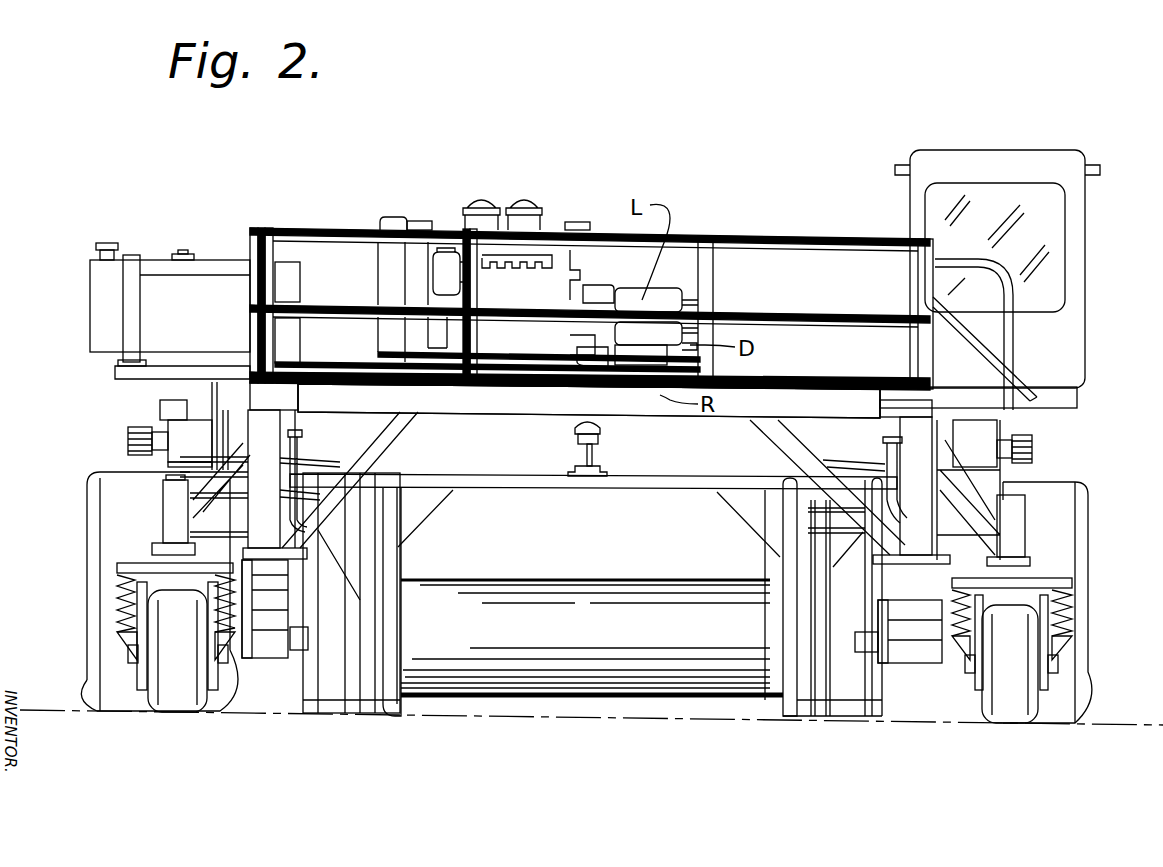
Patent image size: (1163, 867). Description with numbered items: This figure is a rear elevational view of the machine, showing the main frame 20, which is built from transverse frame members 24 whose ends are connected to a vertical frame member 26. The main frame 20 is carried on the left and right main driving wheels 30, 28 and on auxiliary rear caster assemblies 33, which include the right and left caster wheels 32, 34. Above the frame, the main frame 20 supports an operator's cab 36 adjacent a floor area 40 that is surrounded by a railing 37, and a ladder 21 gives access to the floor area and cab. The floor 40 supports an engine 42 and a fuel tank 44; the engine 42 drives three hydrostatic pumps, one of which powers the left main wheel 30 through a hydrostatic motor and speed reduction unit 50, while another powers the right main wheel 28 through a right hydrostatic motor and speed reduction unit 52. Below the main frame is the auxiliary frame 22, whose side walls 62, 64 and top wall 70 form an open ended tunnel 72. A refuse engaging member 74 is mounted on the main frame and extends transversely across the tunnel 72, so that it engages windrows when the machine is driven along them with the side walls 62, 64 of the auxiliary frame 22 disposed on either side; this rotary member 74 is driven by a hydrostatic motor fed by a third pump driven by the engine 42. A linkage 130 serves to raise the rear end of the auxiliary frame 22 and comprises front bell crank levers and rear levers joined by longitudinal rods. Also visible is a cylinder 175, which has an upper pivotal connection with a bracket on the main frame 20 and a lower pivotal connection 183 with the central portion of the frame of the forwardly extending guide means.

The main frame 20 is at (440, 412).
The ladder 21 is at (1010, 338).
The auxiliary frame 22 is at (768, 719).
The transverse frame members 24 is at (672, 410).
The vertical frame member 26 is at (262, 650).
The right main driving wheel 28 is at (1068, 490).
The left main driving wheel 30 is at (120, 492).
The right caster wheel 32 is at (1008, 705).
The auxiliary rear caster assemblies 33 is at (137, 552).
The left caster wheel 34 is at (175, 695).
The operator's cab 36 is at (965, 160).
The railing 37 is at (285, 228).
The floor area 40 is at (838, 386).
The engine 42 is at (392, 217).
The fuel tank 44 is at (105, 285).
The hydrostatic motor and speed reduction unit 50 is at (180, 432).
The right hydrostatic motor and speed reduction unit 52 is at (990, 442).
The side wall 62 is at (845, 718).
The side wall 64 is at (328, 700).
The top wall 70 is at (515, 488).
The open ended tunnel 72 is at (665, 570).
The refuse engaging member 74 is at (520, 672).
The linkage 130 is at (352, 458).
The cylinder 175 is at (575, 426).
The lower pivotal connection 183 is at (600, 466).